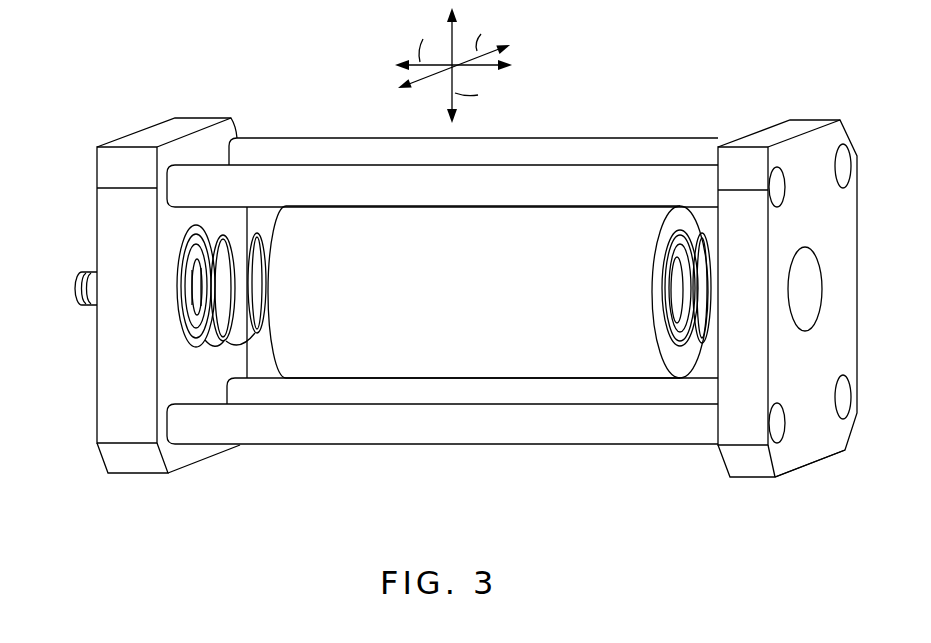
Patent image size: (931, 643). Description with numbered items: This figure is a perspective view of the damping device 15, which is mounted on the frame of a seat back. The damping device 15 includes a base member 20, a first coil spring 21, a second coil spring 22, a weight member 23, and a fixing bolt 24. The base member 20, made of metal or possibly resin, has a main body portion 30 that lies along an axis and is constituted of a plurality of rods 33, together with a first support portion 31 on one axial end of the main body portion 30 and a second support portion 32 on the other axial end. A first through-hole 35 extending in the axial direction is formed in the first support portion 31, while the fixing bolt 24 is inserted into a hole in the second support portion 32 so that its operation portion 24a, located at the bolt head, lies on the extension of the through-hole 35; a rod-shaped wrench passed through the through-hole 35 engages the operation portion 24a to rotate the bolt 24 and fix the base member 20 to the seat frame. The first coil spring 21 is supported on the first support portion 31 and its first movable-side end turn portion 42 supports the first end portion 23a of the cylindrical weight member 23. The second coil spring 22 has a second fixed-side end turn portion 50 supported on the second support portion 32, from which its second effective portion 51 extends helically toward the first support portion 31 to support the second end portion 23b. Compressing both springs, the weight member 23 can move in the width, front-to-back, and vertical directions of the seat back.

The damping device 15 is at (633, 104).
The base member 20 is at (242, 458).
The first coil spring 21 is at (712, 223).
The second coil spring 22 is at (261, 230).
The weight member 23 is at (462, 362).
The first end portion 23a is at (683, 361).
The second end portion 23b is at (272, 350).
The fixing bolt 24 is at (70, 289).
The operation portion 24a is at (190, 255).
The main body portion 30 is at (372, 446).
The first support portion 31 is at (822, 452).
The second support portion 32 is at (168, 388).
The rods 33 is at (345, 157).
The first through-hole 35 is at (805, 333).
The first movable-side end turn portion 42 is at (676, 215).
The second fixed-side end turn portion 50 is at (190, 322).
The second effective portion 51 is at (237, 338).